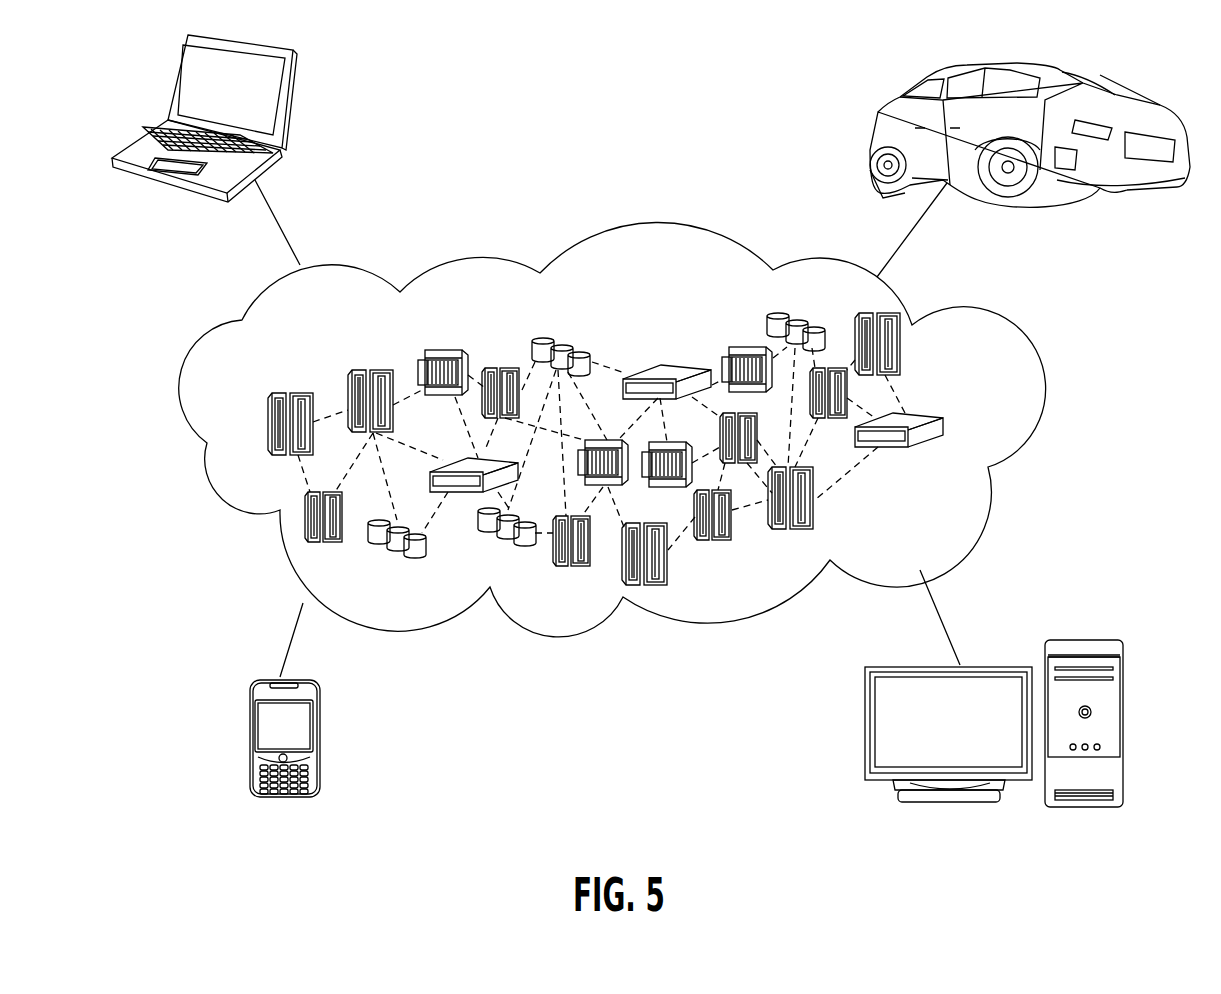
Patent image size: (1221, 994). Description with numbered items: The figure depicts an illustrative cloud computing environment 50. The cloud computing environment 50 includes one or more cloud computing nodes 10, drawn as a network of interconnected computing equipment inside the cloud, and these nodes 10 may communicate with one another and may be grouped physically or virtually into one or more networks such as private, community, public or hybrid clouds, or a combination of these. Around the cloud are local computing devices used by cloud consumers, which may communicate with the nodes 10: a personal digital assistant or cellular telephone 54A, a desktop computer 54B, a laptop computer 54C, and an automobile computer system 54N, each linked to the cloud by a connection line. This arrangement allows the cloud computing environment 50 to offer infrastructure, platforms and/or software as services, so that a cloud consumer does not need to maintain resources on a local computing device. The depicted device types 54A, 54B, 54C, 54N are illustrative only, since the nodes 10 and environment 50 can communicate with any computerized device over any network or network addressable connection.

The cloud computing nodes 10 is at (982, 422).
The cloud computing environment 50 is at (1000, 333).
The personal digital assistant (PDA) or cellular telephone 54A is at (250, 740).
The desktop computer 54B is at (1090, 640).
The laptop computer 54C is at (292, 105).
The automobile computer system 54N is at (878, 112).